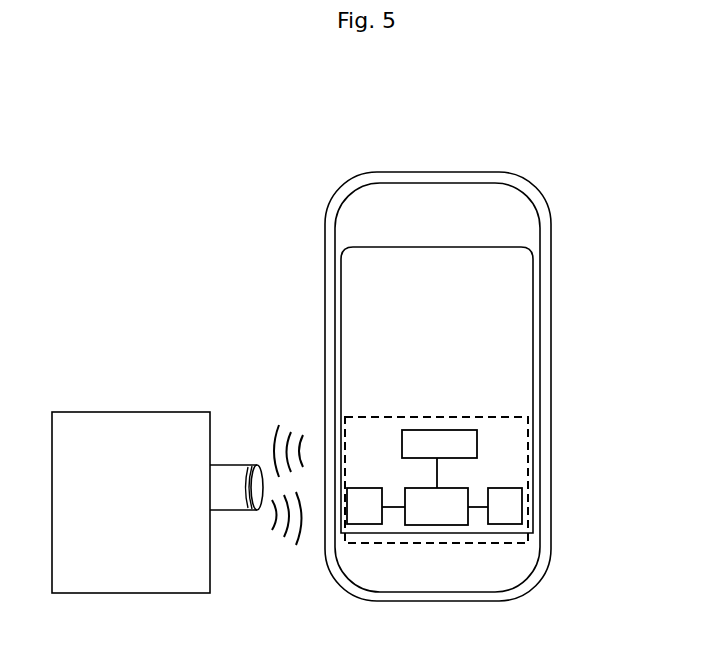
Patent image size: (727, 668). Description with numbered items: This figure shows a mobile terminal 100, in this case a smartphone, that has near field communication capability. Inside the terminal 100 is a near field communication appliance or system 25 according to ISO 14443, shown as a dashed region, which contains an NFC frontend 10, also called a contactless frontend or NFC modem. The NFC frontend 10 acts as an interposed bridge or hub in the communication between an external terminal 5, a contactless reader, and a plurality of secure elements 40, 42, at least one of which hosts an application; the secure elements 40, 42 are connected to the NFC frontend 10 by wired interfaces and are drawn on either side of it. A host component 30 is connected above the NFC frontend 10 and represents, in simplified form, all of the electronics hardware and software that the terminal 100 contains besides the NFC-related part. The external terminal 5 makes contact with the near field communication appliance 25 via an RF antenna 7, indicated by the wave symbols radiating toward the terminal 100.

The terminal 100 is at (535, 190).
The near field communication appliance 25 is at (527, 497).
The host component 30 is at (470, 448).
The NFC frontend 10 is at (443, 508).
The secure element 42 is at (357, 515).
The secure element 40 is at (512, 524).
The external terminal 5 is at (190, 410).
The RF antenna 7 is at (242, 462).